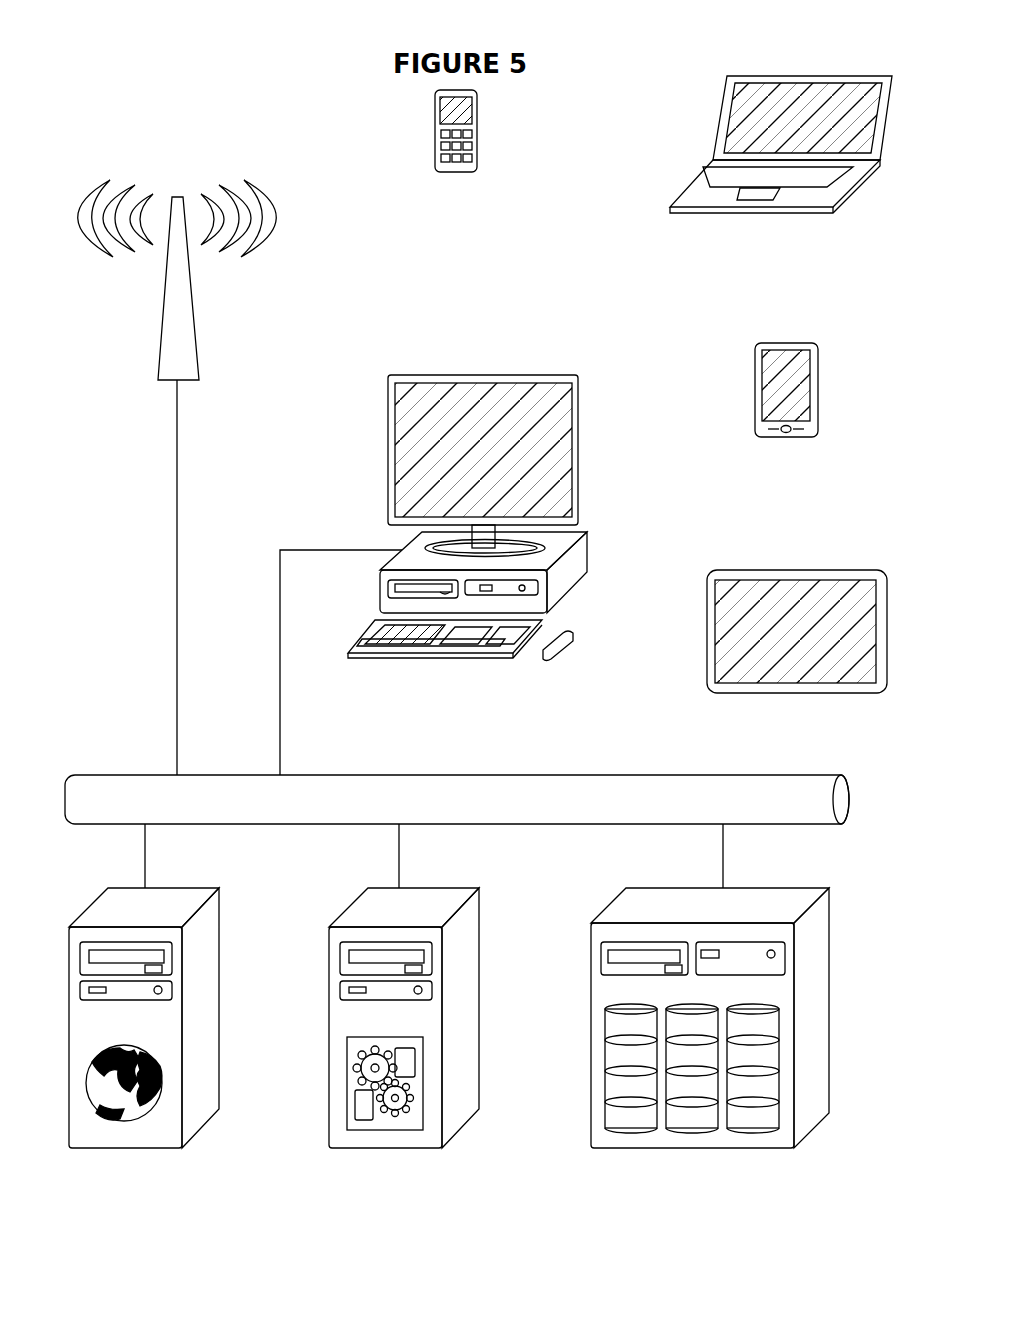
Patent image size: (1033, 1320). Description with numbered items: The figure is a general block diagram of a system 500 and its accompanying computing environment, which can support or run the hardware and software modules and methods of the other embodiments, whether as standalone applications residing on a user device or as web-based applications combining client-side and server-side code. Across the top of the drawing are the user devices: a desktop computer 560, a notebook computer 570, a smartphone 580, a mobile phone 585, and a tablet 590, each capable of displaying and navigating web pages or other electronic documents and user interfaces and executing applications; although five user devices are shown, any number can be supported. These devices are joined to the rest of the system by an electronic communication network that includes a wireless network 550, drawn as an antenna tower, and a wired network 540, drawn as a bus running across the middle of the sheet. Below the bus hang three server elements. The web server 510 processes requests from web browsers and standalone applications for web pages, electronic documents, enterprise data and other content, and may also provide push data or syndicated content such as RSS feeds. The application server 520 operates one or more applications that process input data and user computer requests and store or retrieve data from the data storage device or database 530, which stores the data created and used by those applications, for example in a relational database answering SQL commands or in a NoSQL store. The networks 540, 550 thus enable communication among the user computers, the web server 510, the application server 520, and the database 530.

The system 500 is at (135, 113).
The web server 510 is at (133, 1138).
The application server 520 is at (387, 1142).
The data storage device or database 530 is at (684, 1130).
The wired network 540 is at (457, 719).
The wireless network 550 is at (202, 287).
The desktop computer 560 is at (465, 665).
The notebook computer 570 is at (770, 220).
The smartphone 580 is at (790, 448).
The mobile phone 585 is at (458, 190).
The tablet 590 is at (790, 685).